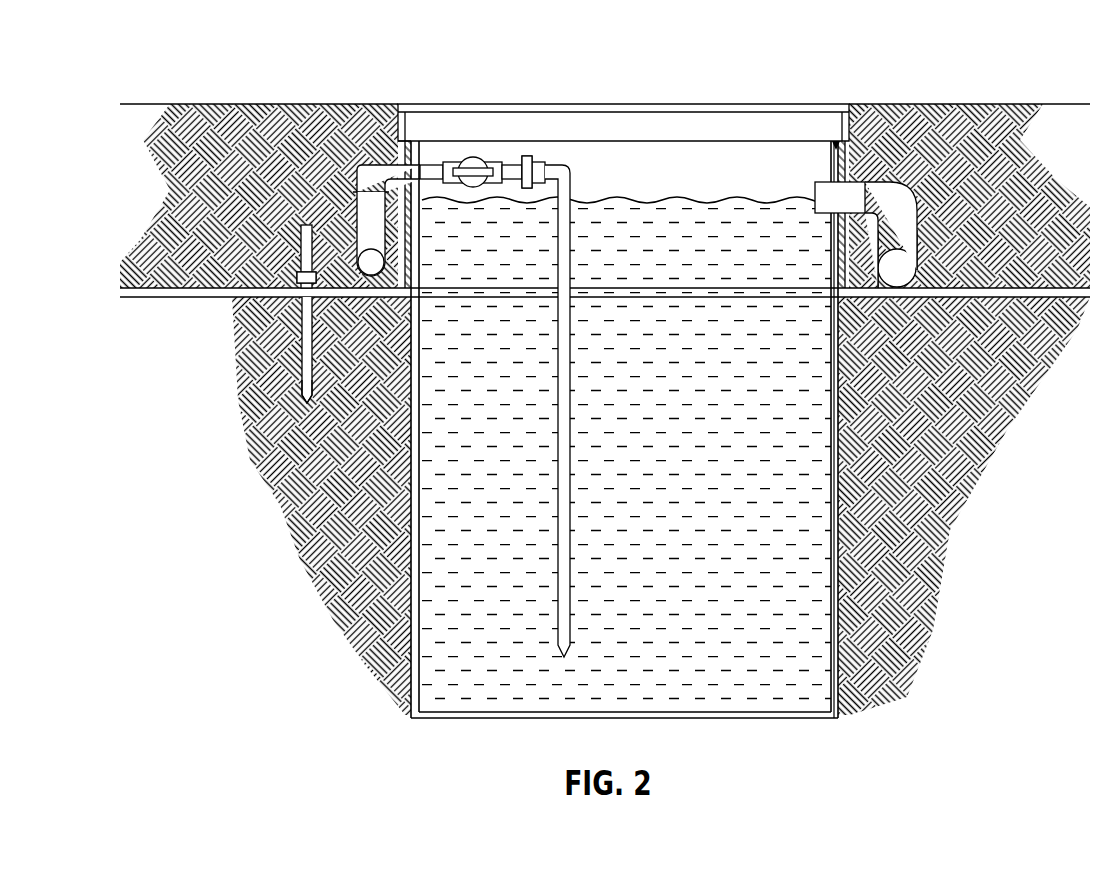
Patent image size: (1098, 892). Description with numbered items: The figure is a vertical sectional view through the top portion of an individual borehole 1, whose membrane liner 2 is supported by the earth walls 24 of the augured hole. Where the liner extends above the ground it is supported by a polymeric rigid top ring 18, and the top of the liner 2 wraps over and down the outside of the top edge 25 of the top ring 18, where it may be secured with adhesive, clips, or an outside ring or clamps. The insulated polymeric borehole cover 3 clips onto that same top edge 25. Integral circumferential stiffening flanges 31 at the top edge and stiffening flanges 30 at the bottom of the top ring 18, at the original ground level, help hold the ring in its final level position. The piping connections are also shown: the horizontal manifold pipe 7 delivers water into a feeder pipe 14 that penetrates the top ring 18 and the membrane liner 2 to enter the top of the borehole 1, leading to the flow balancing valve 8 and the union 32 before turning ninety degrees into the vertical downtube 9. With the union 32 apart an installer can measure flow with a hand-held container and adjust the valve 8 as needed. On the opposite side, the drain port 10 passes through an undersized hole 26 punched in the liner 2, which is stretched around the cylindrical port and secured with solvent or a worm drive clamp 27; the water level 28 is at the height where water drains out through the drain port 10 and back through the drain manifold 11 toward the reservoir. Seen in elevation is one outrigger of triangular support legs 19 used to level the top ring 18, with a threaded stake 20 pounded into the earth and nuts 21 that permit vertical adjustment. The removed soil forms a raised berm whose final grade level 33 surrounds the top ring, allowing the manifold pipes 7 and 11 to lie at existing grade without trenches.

The borehole 1 is at (625, 456).
The membrane liner 2 is at (625, 429).
The borehole cover 3 is at (623, 95).
The horizontal manifold pipe 7 is at (308, 303).
The flow balancing valve 8 is at (482, 217).
The vertical downtube 9 is at (584, 411).
The drain port 10 is at (784, 177).
The drain manifold 11 is at (925, 235).
The feeder pipe 14 is at (359, 167).
The top ring 18 is at (676, 227).
The triangular support legs 19 is at (350, 184).
The threaded stake 20 is at (272, 377).
The nuts 21 is at (280, 261).
The earth walls 24 is at (605, 401).
The top edge 25 is at (366, 108).
The undersized hole 26 is at (807, 382).
The worm drive clamp 27 is at (781, 244).
The water level 28 is at (626, 233).
The stiffening flanges 30 is at (605, 292).
The stiffening flanges 31 is at (622, 204).
The union 32 is at (551, 118).
The final grade level 33 is at (605, 75).